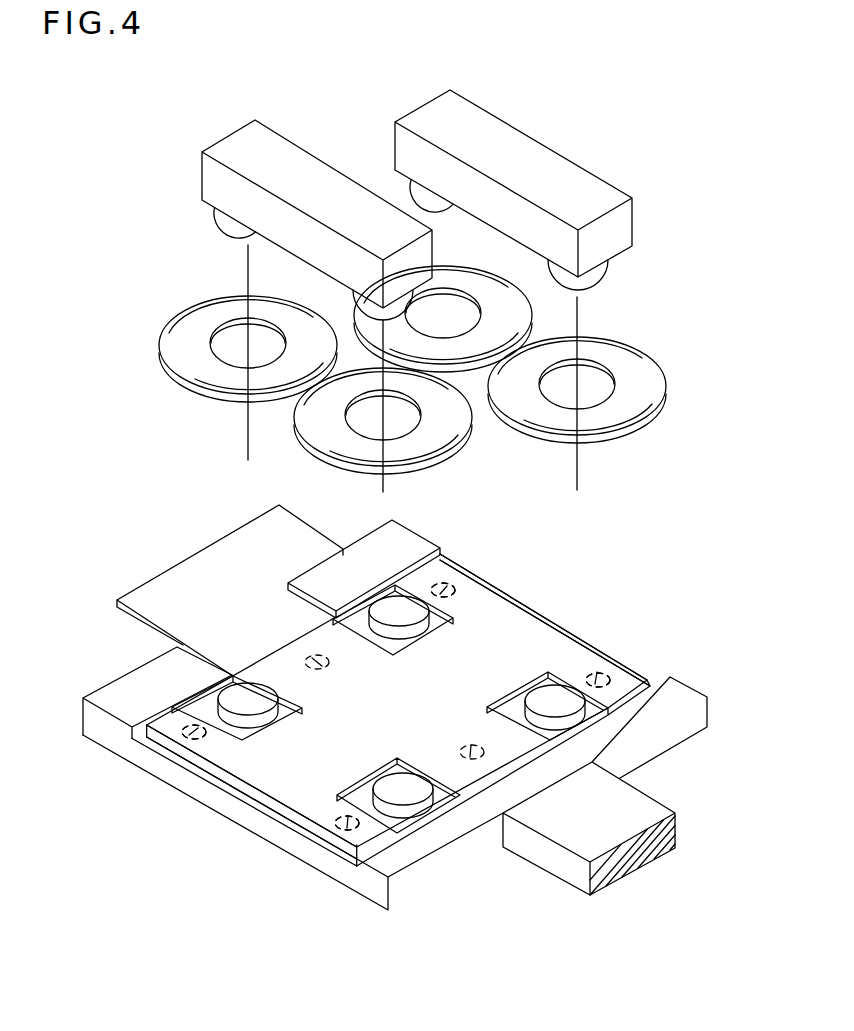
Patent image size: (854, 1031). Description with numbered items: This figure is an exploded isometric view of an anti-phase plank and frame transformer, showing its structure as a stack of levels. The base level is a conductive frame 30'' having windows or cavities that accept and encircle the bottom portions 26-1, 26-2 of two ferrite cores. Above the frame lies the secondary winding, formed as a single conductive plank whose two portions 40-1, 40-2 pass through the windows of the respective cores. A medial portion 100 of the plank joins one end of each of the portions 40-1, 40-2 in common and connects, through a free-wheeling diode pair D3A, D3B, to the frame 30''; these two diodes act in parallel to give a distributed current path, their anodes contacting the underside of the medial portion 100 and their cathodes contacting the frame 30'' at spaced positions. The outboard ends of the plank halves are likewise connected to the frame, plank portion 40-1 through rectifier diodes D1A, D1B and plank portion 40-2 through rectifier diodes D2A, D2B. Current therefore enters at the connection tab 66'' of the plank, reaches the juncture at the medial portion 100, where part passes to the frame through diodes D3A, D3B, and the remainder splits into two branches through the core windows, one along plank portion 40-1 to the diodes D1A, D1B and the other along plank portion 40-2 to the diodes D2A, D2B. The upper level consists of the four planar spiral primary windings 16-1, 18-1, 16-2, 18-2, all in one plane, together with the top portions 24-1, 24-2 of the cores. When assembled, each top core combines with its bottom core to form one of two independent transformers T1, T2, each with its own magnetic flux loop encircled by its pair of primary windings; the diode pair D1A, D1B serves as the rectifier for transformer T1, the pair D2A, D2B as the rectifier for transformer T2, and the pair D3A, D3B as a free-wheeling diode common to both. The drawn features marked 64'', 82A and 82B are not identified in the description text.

The top portion of core 24-1 is at (528, 153).
The top portion of core 24-2 is at (245, 160).
The primary winding 16-1 is at (509, 295).
The primary winding 16-2 is at (193, 355).
The primary winding 18-1 is at (606, 354).
The primary winding 18-2 is at (437, 428).
The connection tab 66'' is at (212, 579).
The conductive frame 30'' is at (231, 611).
The base plate 64'' is at (395, 835).
The medial portion of plank 100 is at (410, 720).
The transformer T1 is at (528, 615).
The transformer T2 is at (277, 779).
The plank portion 40-1 is at (508, 671).
The plank portion 40-2 is at (337, 768).
The bottom portion of core 26-1 is at (395, 612).
The bottom portion of core 26-2 is at (250, 702).
The rectifier diode D1A is at (463, 604).
The rectifier diode D1B is at (590, 657).
The rectifier diode D2A is at (193, 745).
The rectifier diode D2B is at (345, 832).
The free-wheeling diode D3A is at (304, 648).
The free-wheeling diode D3B is at (468, 740).
The hole 82A is at (468, 574).
The hole 82B is at (618, 669).